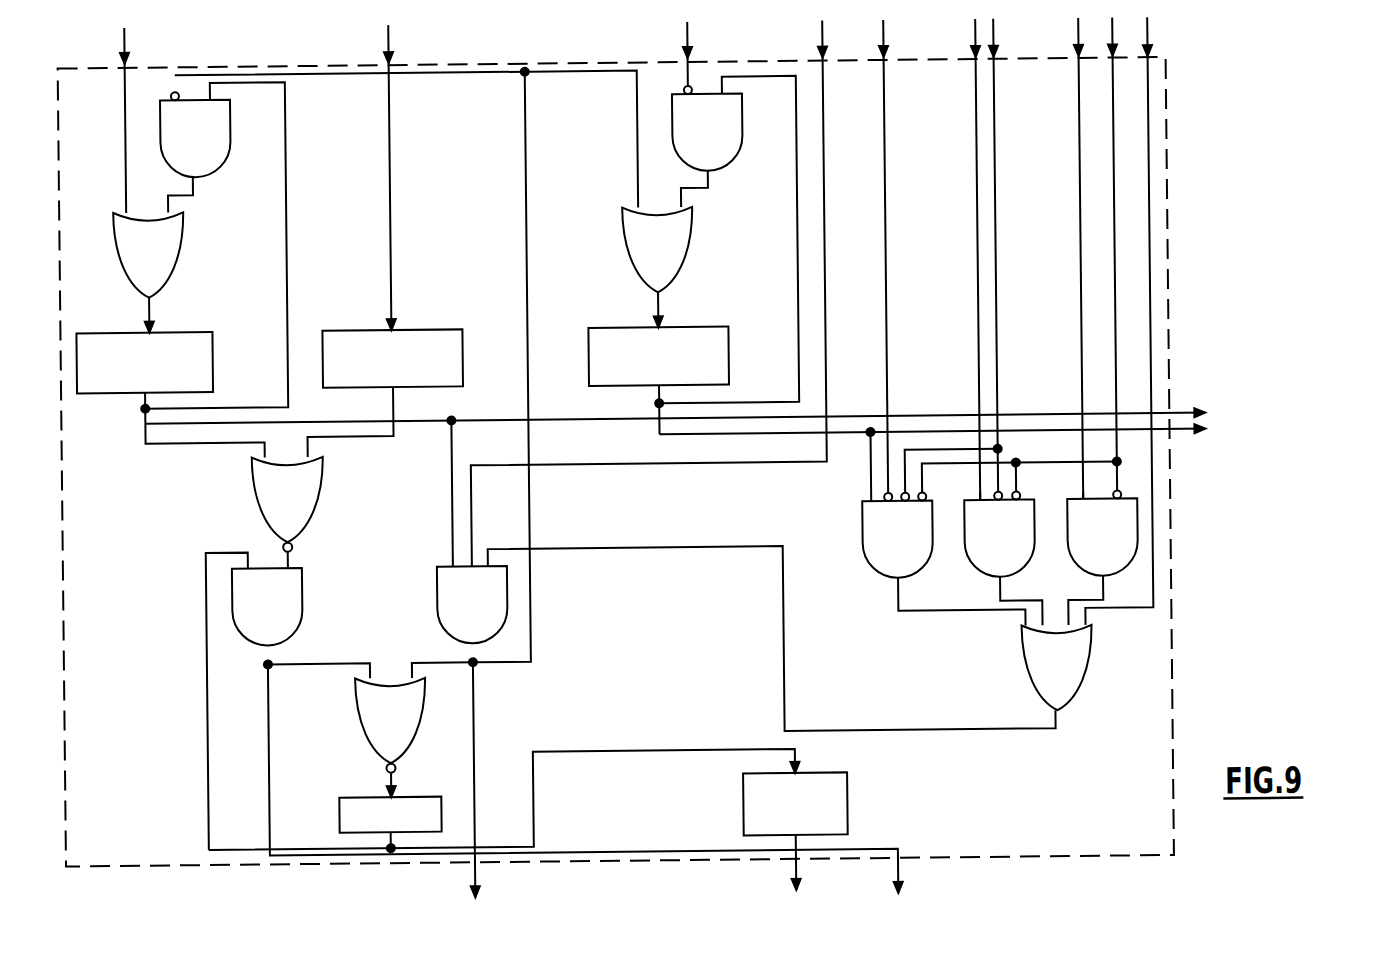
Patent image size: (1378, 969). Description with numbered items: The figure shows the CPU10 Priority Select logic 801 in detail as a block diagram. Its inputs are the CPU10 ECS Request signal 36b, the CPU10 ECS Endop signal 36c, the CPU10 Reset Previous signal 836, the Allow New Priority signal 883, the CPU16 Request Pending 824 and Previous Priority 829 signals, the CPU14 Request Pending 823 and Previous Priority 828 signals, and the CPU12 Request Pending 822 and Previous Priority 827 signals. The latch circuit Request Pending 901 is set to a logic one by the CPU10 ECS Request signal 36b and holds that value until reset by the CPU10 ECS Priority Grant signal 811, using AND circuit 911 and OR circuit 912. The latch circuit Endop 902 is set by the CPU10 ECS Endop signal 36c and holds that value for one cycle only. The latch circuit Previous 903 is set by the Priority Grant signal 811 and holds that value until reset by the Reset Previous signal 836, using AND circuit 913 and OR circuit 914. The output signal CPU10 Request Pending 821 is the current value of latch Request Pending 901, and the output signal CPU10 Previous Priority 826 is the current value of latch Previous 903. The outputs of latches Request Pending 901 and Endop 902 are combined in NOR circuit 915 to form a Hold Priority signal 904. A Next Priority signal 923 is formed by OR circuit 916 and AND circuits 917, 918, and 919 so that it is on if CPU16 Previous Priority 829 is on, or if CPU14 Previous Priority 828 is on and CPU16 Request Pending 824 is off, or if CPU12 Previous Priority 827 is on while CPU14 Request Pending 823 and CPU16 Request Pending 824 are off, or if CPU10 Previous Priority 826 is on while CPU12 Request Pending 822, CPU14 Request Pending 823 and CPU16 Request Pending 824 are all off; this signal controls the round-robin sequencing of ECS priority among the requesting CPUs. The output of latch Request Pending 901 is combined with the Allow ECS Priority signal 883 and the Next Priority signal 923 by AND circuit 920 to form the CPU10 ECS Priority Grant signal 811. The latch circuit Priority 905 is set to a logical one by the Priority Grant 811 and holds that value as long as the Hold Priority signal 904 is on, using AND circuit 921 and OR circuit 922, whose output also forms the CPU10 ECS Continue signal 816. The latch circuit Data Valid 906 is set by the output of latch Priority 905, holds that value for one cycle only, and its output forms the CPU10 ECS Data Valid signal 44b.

The CPU10 ECS Request signal 36b is at (160, 120).
The CPU10 ECS Endop signal 36c is at (426, 177).
The CPU10 Reset Previous signal 836 is at (731, 53).
The Allow New Priority signal 883 is at (672, 293).
The CPU12 Request Pending signal 822 is at (912, 256).
The CPU12 Previous Priority signal 827 is at (942, 260).
The CPU14 Previous Priority signal 828 is at (980, 255).
The CPU14 Request Pending signal 823 is at (1049, 259).
The CPU16 Request Pending signal 824 is at (1019, 255).
The CPU16 Previous Priority signal 829 is at (1155, 320).
The CPU10 Request Pending signal 821 is at (755, 389).
The CPU10 Previous Priority signal 826 is at (1012, 451).
The CPU10 Priority Select logic 801 is at (616, 462).
The Request Pending latch circuit 901 is at (146, 346).
The Endop latch circuit 902 is at (392, 343).
The Previous latch circuit 903 is at (668, 339).
The Hold Priority signal 904 is at (321, 548).
The Priority latch circuit 905 is at (370, 799).
The Data Valid latch circuit 906 is at (809, 787).
The AND circuit 911 is at (211, 142).
The OR circuit 912 is at (175, 270).
The AND circuit 913 is at (732, 137).
The OR circuit 914 is at (696, 264).
The NOR circuit 915 is at (318, 493).
The OR circuit 916 is at (1023, 668).
The AND circuit 917 is at (872, 546).
The AND circuit 918 is at (977, 543).
The AND circuit 919 is at (1077, 543).
The AND circuit 920 is at (440, 605).
The AND circuit 921 is at (298, 606).
The OR circuit 922 is at (356, 736).
The Next Priority signal 923 is at (772, 638).
The CPU10 ECS Priority Grant signal 811 is at (342, 781).
The CPU10 ECS Data Valid signal 44b is at (698, 866).
The CPU10 ECS Continue signal 816 is at (716, 777).